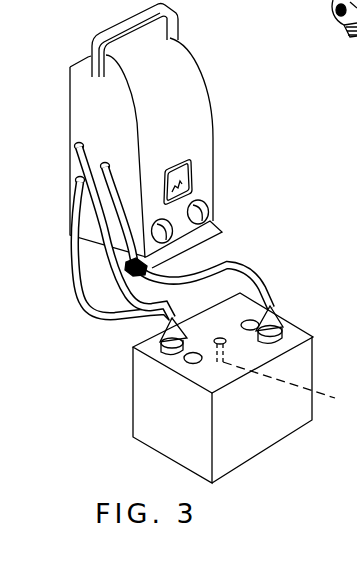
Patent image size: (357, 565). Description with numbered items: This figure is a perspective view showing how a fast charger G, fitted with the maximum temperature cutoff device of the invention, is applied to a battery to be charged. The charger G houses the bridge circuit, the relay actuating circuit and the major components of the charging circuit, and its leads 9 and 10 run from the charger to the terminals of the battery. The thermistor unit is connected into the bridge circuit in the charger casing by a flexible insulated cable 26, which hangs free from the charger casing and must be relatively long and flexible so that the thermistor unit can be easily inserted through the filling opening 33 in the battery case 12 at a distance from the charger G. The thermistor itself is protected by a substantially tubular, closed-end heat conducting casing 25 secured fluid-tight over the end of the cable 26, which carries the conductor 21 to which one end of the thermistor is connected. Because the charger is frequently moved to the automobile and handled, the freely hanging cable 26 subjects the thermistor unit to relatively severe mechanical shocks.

The charger G is at (205, 108).
The lead 9 is at (78, 264).
The flexible insulated cable 26 is at (118, 278).
The lead 10 is at (250, 272).
The battery case 12 is at (316, 347).
The filling opening 33 is at (228, 352).
The heat conducting casing 25 is at (290, 386).
The conductor 21 is at (337, 27).